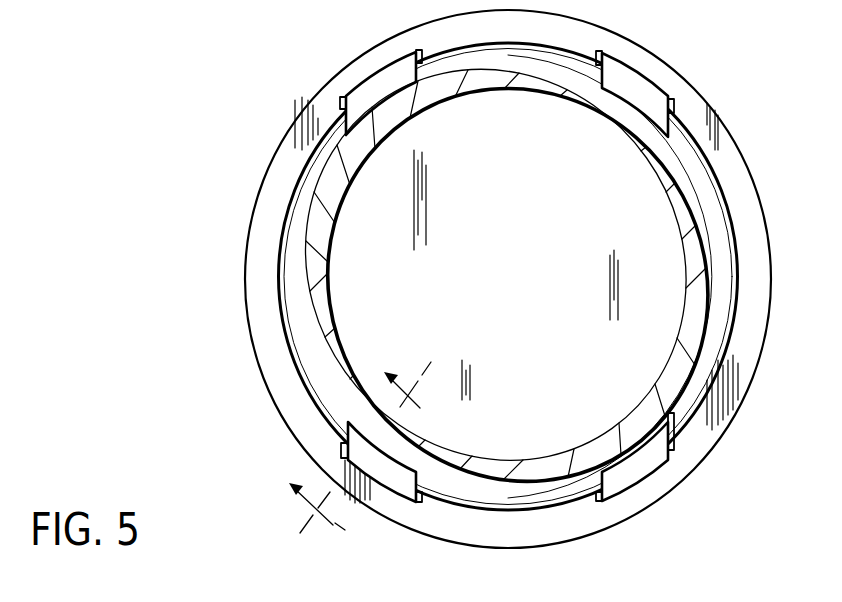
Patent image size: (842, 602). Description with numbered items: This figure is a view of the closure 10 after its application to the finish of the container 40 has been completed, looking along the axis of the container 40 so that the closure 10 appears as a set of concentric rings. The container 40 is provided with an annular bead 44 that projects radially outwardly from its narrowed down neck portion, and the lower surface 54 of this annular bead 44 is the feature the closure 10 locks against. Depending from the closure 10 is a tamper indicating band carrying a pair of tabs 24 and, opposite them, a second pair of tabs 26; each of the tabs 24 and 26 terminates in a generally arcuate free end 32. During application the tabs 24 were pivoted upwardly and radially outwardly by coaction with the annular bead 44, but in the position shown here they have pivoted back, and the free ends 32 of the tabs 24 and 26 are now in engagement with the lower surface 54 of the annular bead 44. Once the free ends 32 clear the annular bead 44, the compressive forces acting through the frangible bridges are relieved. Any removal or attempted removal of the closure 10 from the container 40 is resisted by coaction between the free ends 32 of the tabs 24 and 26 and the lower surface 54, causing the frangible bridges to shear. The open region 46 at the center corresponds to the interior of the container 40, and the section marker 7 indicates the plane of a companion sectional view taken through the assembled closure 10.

The closure 10 is at (236, 237).
The lower surface of the annular bead 54 is at (310, 198).
The free end 32 is at (377, 107).
The container 40 is at (332, 312).
The annular bead 44 is at (318, 224).
The second pair of tabs 26 is at (545, 93).
The tabs 24 is at (594, 461).
The central bore 46 is at (517, 272).
The section line 7- 7 is at (355, 441).